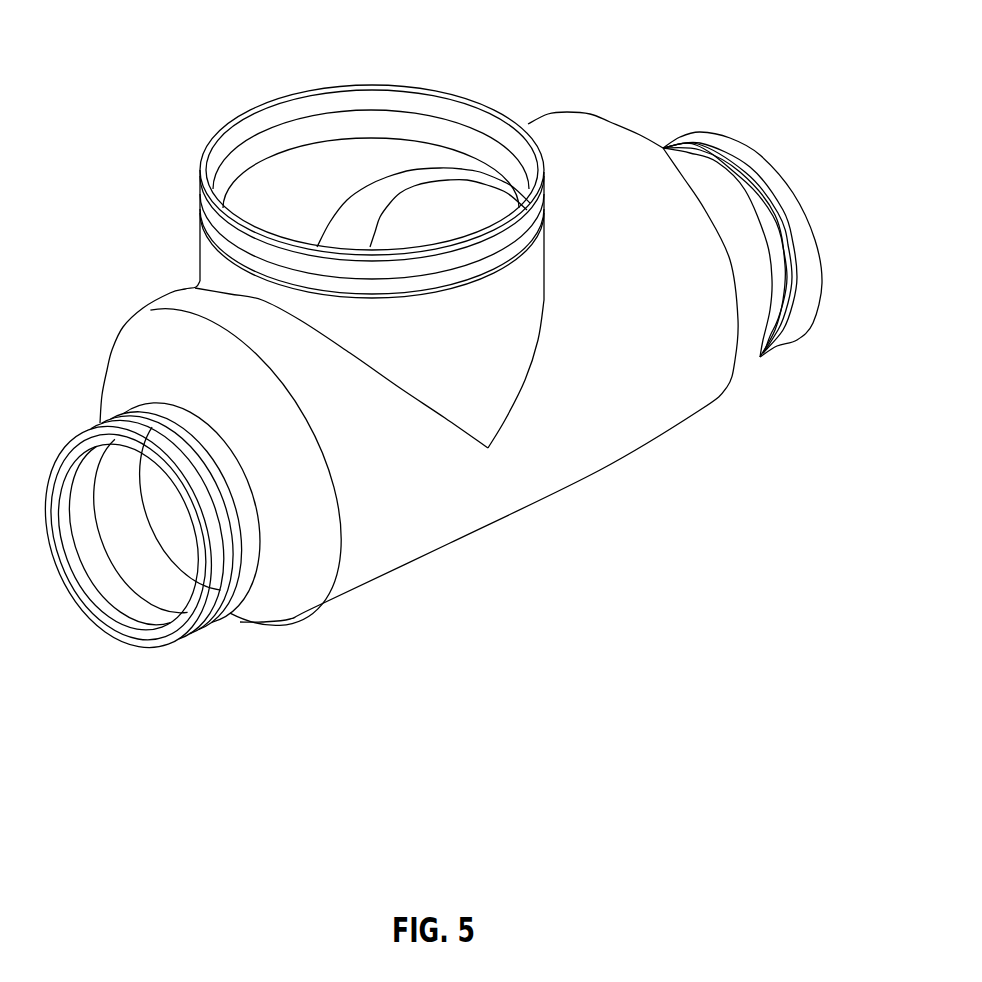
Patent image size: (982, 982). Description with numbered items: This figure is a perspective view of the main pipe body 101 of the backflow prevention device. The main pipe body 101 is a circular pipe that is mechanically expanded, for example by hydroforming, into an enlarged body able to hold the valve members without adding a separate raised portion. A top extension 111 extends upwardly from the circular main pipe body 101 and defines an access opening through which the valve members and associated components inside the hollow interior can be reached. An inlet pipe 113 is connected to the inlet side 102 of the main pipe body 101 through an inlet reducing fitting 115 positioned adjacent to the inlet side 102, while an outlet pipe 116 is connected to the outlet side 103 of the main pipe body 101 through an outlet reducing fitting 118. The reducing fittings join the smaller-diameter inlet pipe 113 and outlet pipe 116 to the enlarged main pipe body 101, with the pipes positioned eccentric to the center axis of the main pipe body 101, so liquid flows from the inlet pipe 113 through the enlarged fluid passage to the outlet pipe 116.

The main pipe body 101 is at (583, 122).
The top extension 111 is at (430, 103).
The inlet pipe 113 is at (98, 428).
The inlet reducing fitting 115 is at (222, 622).
The inlet side 102 is at (255, 592).
The outlet pipe 116 is at (784, 208).
The outlet reducing fitting 118 is at (688, 145).
The outlet side 103 is at (787, 343).